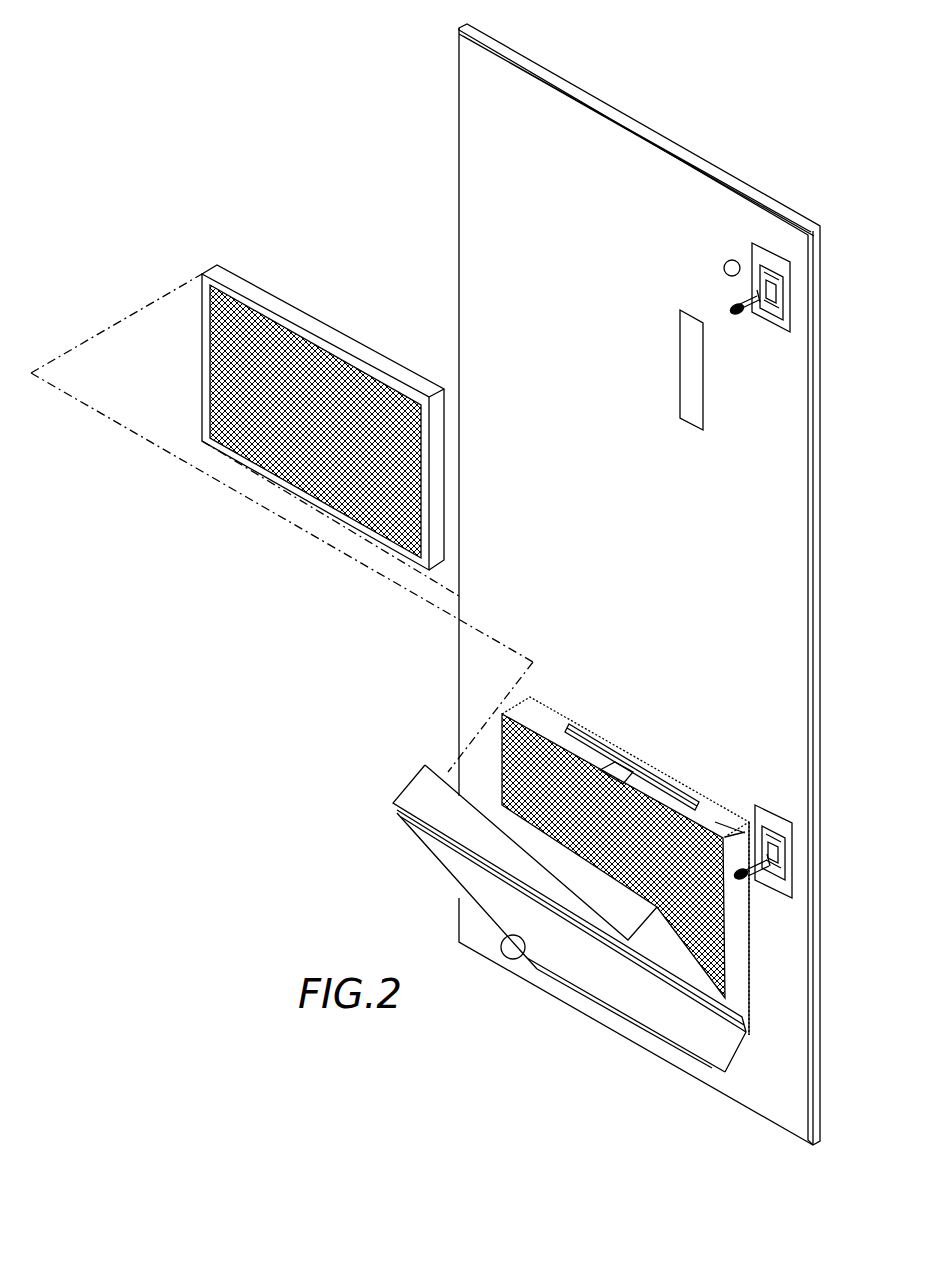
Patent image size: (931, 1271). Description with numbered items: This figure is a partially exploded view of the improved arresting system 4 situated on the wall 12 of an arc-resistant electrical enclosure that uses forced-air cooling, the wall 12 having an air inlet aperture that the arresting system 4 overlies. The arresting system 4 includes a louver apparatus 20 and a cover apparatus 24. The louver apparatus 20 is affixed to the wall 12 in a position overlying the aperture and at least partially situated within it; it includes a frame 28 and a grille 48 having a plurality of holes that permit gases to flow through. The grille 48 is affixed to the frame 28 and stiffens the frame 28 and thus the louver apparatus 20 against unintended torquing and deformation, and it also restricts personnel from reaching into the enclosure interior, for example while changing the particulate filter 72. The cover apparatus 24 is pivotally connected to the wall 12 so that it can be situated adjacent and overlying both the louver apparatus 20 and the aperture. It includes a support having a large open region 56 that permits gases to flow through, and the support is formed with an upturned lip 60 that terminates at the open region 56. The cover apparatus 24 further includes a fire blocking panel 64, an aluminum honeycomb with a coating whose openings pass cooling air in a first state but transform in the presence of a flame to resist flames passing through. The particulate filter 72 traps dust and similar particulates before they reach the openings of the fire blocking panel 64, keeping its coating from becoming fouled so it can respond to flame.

The wall 12 is at (472, 137).
The arresting system 4 is at (338, 683).
The fire blocking panel 64 is at (282, 306).
The louver apparatus 20 is at (541, 719).
The cover apparatus 24 is at (539, 918).
The frame 28 is at (693, 813).
The grille 48 is at (702, 832).
The open region 56 is at (520, 963).
The upturned lip 60 is at (547, 974).
The particulate filter 72 is at (600, 982).